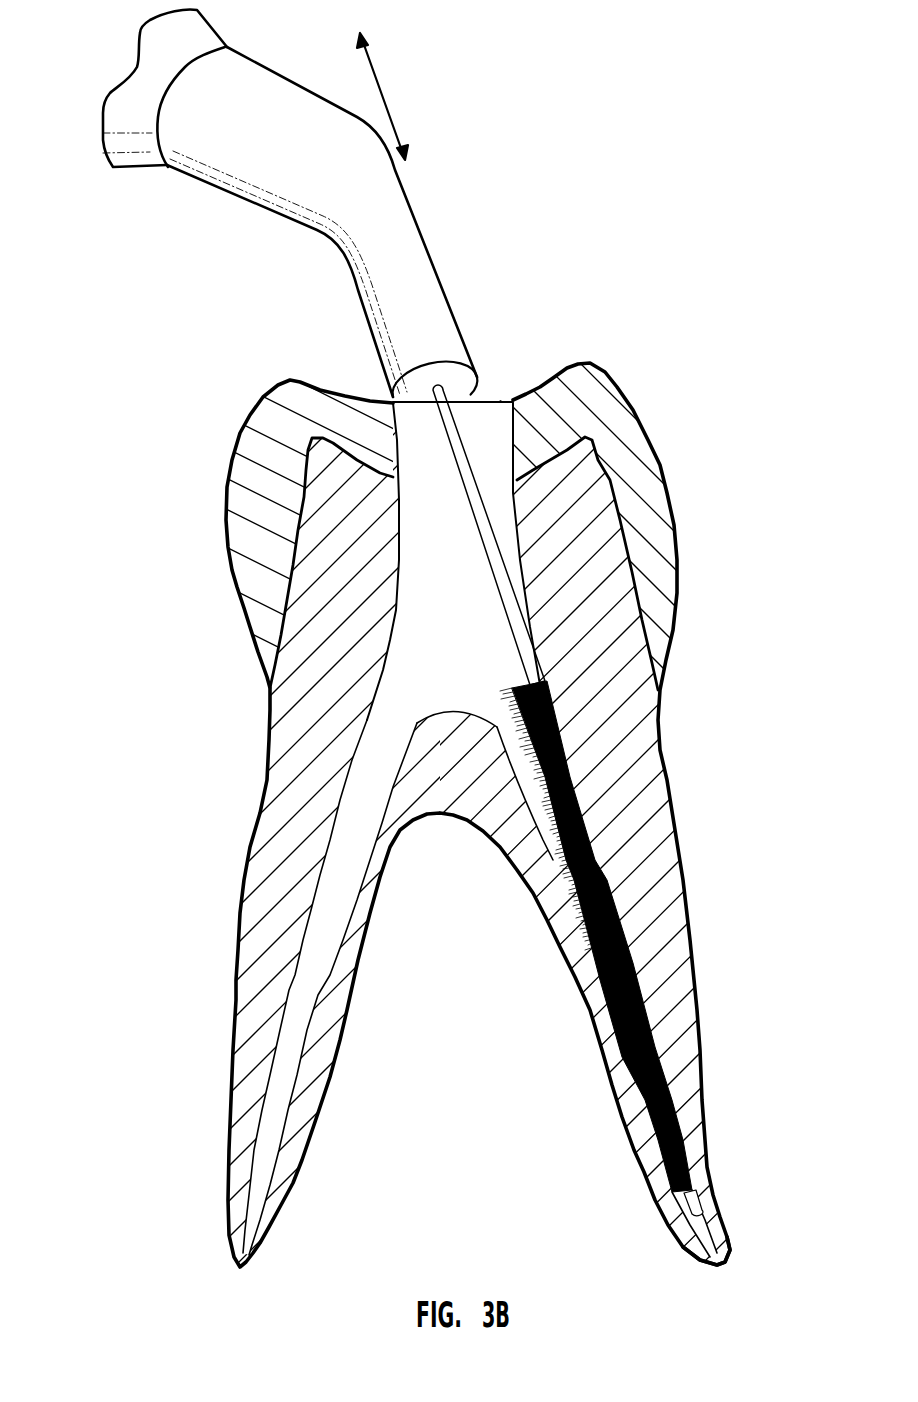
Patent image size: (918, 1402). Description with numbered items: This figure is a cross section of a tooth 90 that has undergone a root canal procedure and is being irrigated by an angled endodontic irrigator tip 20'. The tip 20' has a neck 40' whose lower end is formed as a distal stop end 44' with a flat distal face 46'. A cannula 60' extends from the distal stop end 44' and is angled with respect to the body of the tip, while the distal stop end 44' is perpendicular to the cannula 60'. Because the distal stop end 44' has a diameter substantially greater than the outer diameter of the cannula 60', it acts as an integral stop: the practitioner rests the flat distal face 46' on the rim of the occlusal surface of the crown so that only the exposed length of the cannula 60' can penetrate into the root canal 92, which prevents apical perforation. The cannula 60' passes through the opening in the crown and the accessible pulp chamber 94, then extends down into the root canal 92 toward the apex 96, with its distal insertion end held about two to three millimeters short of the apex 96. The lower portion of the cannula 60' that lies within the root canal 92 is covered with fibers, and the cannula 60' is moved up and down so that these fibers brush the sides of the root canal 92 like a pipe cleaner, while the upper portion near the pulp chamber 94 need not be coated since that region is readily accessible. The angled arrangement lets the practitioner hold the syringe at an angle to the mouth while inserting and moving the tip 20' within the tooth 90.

The irrigator tip 20' is at (290, 203).
The neck 40' is at (455, 101).
The distal stop end 44' is at (476, 337).
The flat distal face 46' is at (508, 506).
The cannula 60' is at (635, 928).
The tooth 90 is at (640, 337).
The root canal 92 is at (497, 725).
The pulp chamber 94 is at (443, 690).
The apex 96 is at (730, 1253).